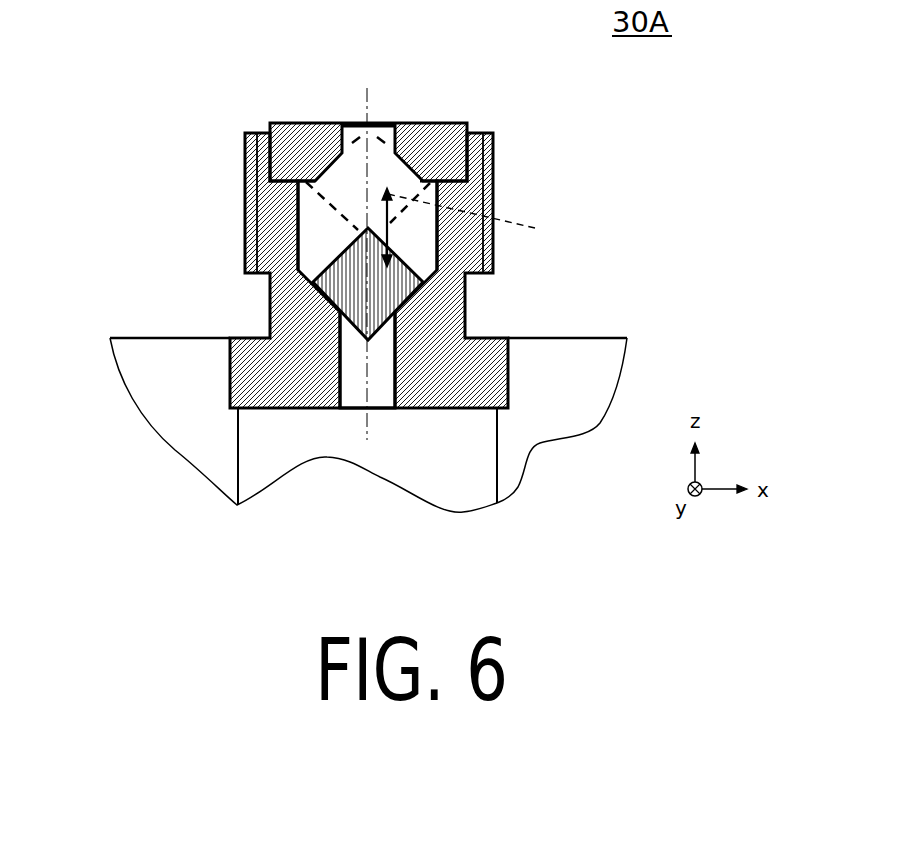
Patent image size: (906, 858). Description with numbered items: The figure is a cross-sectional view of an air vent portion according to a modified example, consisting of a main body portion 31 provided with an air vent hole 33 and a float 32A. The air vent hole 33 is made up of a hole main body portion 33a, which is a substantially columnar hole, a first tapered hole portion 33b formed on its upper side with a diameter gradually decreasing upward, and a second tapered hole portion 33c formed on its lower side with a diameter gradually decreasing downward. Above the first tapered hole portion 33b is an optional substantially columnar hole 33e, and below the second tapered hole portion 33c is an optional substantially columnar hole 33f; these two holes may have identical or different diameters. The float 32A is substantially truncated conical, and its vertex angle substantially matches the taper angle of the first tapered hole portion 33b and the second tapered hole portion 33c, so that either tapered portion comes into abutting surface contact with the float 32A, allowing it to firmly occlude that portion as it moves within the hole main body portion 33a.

The main body portion 31 is at (473, 125).
The float 32A is at (392, 268).
The air vent hole 33 is at (130, 302).
The hole main body portion 33a is at (298, 224).
The first tapered hole portion 33b is at (312, 187).
The second tapered hole portion 33c is at (318, 280).
The substantially columnar hole 33e is at (333, 150).
The substantially columnar hole 33f is at (346, 368).